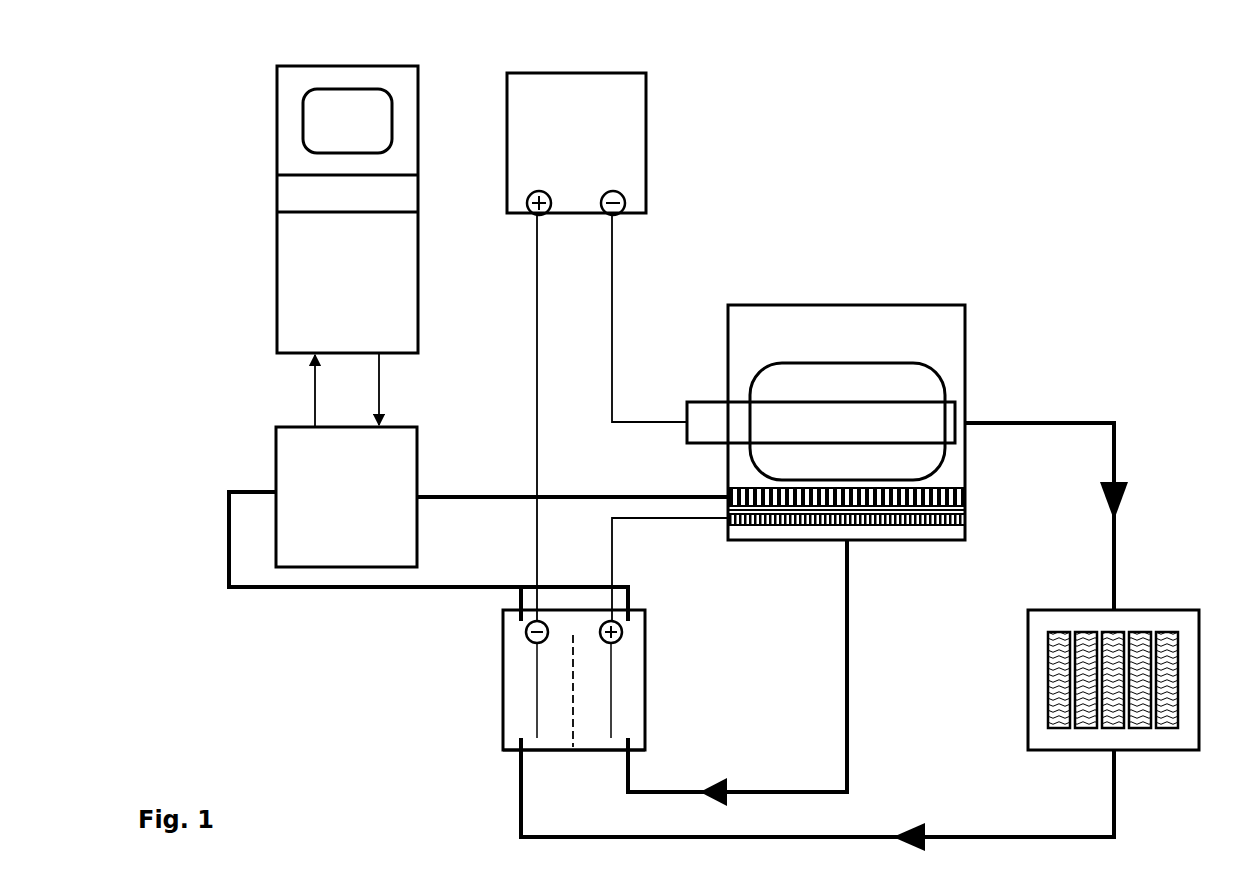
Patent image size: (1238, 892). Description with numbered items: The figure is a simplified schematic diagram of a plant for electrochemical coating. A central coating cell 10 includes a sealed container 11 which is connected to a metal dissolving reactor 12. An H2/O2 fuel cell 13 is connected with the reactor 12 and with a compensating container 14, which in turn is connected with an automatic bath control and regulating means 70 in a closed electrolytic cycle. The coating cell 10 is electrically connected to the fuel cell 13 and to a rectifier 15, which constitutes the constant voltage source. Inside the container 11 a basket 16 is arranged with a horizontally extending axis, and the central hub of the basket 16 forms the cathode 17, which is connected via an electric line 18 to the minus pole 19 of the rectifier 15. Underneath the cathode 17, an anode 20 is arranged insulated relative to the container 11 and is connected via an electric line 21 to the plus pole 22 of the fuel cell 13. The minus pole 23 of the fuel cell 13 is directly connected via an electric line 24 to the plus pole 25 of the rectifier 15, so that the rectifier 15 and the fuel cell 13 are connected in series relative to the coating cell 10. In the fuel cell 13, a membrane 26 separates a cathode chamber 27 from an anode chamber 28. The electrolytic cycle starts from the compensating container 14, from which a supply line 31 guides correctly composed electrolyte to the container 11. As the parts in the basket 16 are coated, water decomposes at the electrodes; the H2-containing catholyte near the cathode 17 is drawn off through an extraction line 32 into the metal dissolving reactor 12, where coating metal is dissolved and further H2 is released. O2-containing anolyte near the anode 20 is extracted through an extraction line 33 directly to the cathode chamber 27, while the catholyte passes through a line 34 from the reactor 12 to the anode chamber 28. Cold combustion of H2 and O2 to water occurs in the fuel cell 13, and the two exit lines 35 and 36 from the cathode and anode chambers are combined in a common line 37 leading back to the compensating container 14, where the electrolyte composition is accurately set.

The central coating cell 10 is at (1048, 225).
The sealed container 11 is at (775, 305).
The metal dissolving reactor 12 is at (1172, 610).
The H2/O2 fuel cell 13 is at (645, 698).
The compensating container 14 is at (276, 455).
The rectifier 15 is at (646, 122).
The basket 16 is at (834, 363).
The cathode 17 is at (893, 402).
The electric line 18 is at (643, 422).
The minus pole 19 is at (625, 203).
The anode 20 is at (758, 527).
The electric line 21 is at (686, 522).
The plus pole 22 is at (622, 633).
The minus pole 23 is at (526, 633).
The electric line 24 is at (537, 297).
The plus pole 25 is at (527, 203).
The membrane 26 is at (576, 718).
The cathode chamber 27 is at (555, 750).
The anode chamber 28 is at (520, 717).
The supply line 31 is at (555, 497).
The extraction line 32 is at (1038, 422).
The extraction line 33 is at (848, 652).
The line 34 is at (966, 835).
The exit line 35 is at (632, 590).
The exit line 36 is at (520, 583).
The common line 37 is at (335, 592).
The automatic bath control and regulating means 70 is at (276, 255).